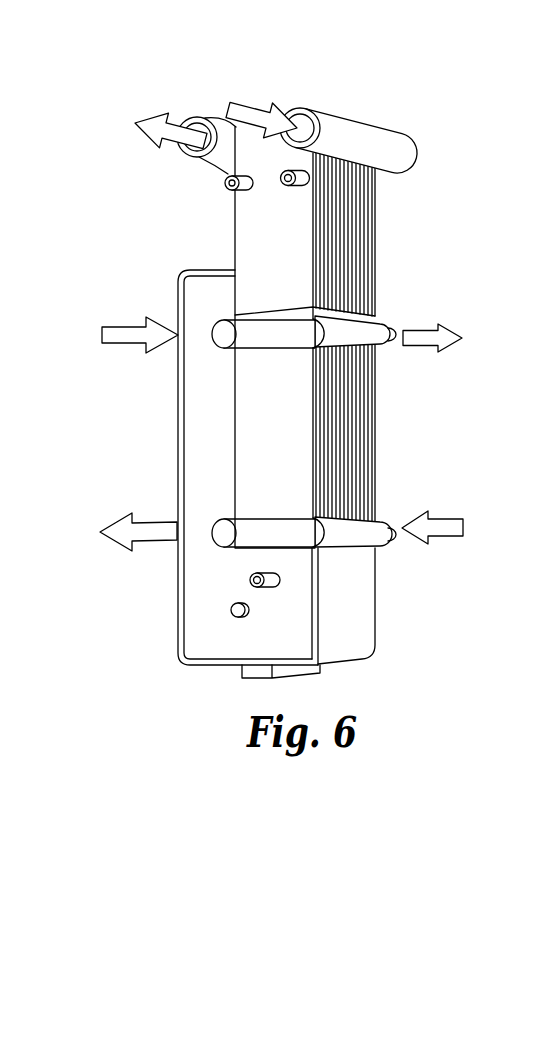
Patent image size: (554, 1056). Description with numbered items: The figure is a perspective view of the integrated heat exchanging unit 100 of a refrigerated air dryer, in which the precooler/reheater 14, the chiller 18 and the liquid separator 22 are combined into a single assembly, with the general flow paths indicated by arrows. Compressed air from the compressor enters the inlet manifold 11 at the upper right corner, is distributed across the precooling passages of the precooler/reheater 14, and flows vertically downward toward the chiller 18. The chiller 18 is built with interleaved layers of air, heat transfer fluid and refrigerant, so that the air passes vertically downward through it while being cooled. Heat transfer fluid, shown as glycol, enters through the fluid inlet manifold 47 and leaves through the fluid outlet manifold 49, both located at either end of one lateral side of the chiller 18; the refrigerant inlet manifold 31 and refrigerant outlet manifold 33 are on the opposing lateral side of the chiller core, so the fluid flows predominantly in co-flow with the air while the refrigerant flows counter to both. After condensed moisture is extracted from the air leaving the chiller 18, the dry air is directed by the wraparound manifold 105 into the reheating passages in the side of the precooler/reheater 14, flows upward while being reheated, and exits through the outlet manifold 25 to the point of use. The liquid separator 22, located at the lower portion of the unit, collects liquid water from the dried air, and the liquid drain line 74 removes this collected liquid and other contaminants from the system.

The integrated heat exchanging unit 100 is at (482, 138).
The inlet manifold 11 is at (337, 127).
The outlet manifold 25 is at (218, 119).
The precooler/reheater 14 is at (277, 212).
The chiller 18 is at (348, 422).
The refrigerant outlet manifold 33 is at (380, 326).
The refrigerant inlet manifold 31 is at (355, 538).
The fluid inlet manifold 47 is at (213, 330).
The fluid outlet manifold 49 is at (222, 534).
The wraparound manifold 105 is at (205, 433).
The liquid separator 22 is at (220, 623).
The liquid drain line 74 is at (277, 680).